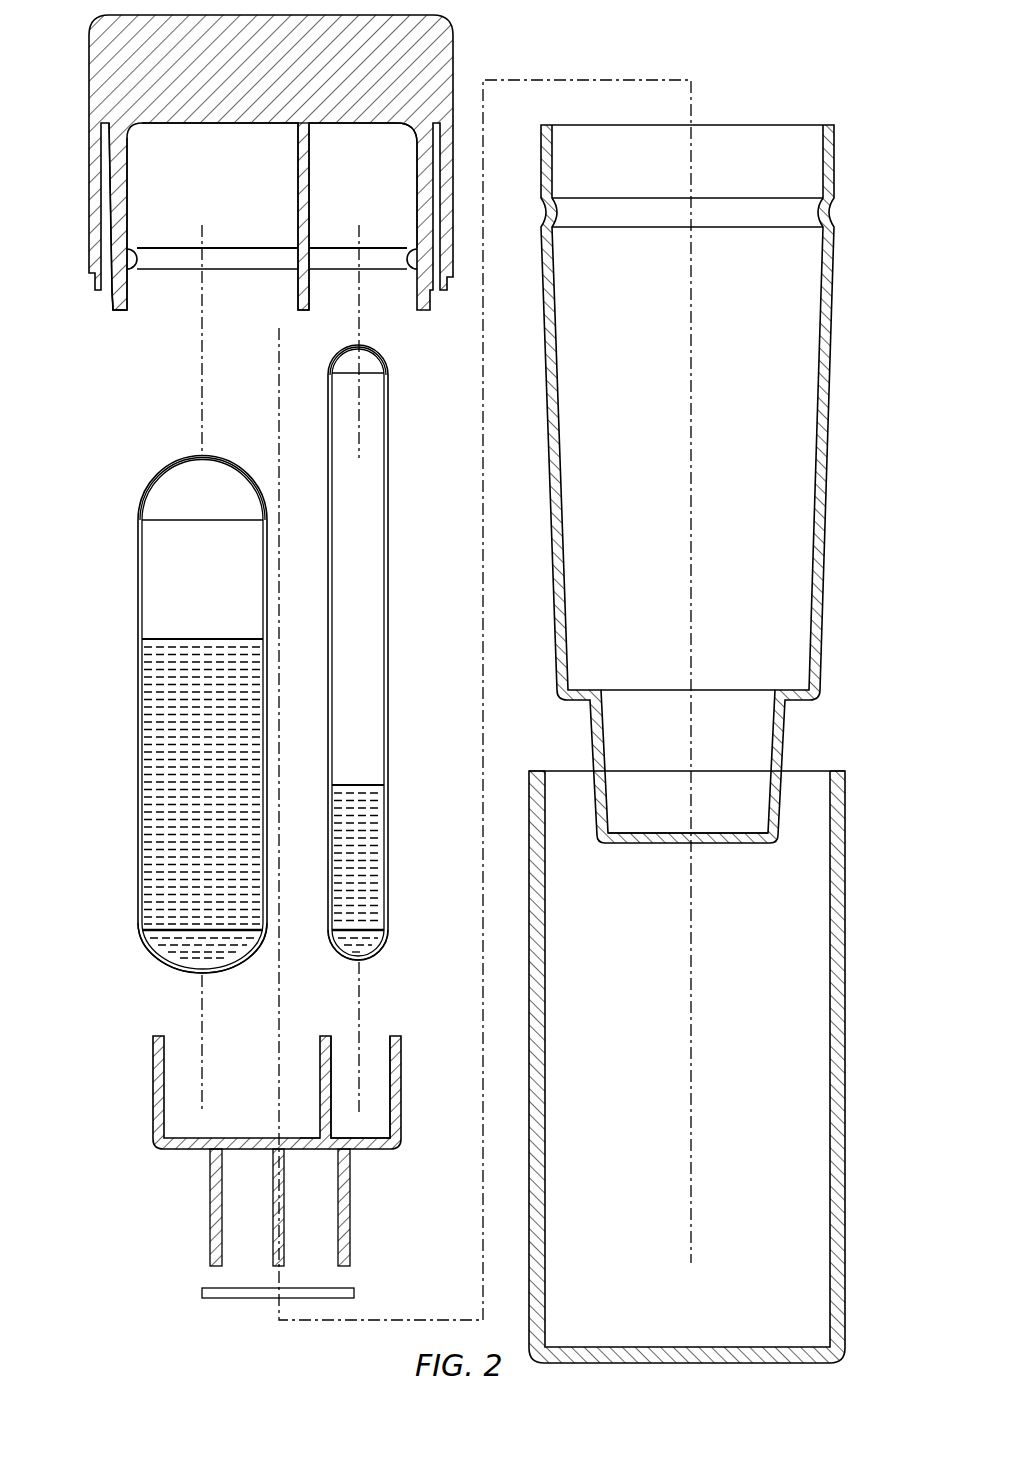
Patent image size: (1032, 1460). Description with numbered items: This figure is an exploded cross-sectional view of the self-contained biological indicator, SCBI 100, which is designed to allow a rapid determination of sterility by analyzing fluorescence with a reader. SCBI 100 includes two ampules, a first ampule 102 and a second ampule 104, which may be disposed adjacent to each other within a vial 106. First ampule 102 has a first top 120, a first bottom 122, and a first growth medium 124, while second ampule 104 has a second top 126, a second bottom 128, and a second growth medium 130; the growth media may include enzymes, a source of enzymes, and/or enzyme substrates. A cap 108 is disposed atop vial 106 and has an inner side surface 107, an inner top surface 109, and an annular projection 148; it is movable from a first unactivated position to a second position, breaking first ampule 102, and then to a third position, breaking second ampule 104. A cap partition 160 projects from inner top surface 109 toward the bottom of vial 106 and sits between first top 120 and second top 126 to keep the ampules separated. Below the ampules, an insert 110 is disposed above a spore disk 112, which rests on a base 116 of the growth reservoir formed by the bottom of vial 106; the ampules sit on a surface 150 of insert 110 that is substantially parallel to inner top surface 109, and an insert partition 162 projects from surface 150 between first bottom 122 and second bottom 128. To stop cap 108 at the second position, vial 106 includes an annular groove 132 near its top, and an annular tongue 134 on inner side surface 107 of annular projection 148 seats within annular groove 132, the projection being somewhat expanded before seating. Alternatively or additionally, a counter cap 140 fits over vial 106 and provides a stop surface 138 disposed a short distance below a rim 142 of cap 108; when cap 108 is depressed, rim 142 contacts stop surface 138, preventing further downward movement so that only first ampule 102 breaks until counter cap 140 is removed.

The SCBI 100 is at (792, 55).
The first ampule 102 is at (400, 663).
The second ampule 104 is at (151, 714).
The vial 106 is at (730, 517).
The inner side surface 107 is at (125, 212).
The cap 108 is at (438, 75).
The inner top surface 109 is at (238, 124).
The insert 110 is at (313, 1151).
The spore disk 112 is at (242, 1293).
The base 116 is at (663, 838).
The first top 120 is at (368, 363).
The first bottom 122 is at (358, 940).
The first growth medium 124 is at (358, 848).
The second top 126 is at (182, 493).
The second bottom 128 is at (183, 943).
The second growth medium 130 is at (185, 740).
The annular groove 132 is at (836, 212).
The annular tongue 134 is at (130, 260).
The stop surface 138 is at (838, 772).
The counter cap 140 is at (725, 1048).
The rim 142 is at (118, 311).
The annular projection 148 is at (430, 200).
The surface 150 is at (303, 1141).
The cap partition 160 is at (302, 233).
The insert partition 162 is at (395, 1075).